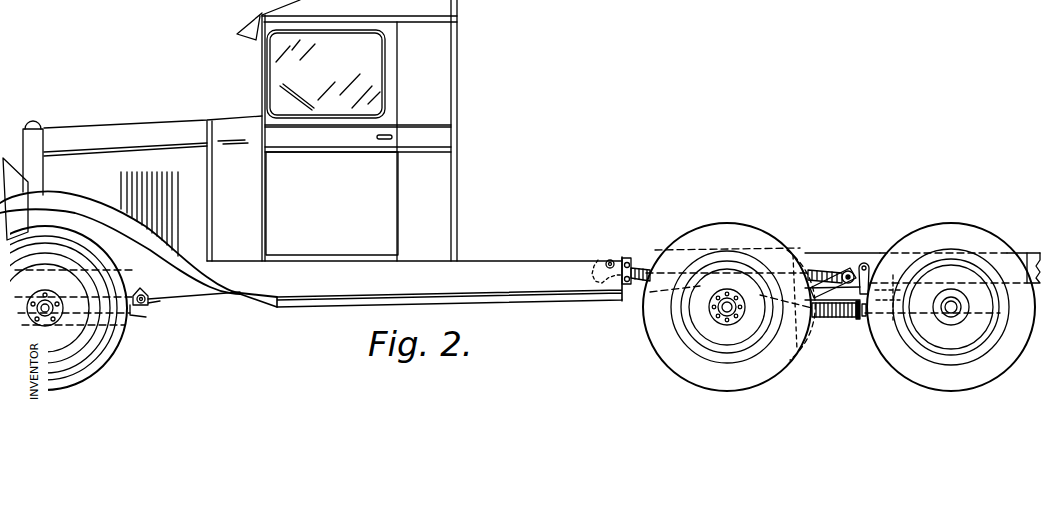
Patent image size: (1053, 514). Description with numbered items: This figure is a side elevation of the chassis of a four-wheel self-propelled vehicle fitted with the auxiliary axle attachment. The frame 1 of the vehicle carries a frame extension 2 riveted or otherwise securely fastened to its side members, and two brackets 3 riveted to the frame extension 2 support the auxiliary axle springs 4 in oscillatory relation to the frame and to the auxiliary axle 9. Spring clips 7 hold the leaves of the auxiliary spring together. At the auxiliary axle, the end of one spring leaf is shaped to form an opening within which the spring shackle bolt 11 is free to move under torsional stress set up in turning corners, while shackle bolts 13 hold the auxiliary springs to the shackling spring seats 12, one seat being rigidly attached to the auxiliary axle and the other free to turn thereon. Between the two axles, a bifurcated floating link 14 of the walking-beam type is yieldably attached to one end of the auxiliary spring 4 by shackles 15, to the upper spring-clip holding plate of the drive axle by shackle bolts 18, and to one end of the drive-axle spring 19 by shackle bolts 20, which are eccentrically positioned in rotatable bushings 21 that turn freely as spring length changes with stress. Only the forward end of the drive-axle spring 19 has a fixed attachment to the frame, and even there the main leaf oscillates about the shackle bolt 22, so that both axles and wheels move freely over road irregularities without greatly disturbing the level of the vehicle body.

The frame 1 is at (645, 256).
The frame extension 2 is at (849, 270).
The bracket 3 is at (870, 268).
The auxiliary axle spring 4 is at (840, 316).
The spring clip 7 is at (857, 320).
The auxiliary axle 9 is at (964, 302).
The spring shackle bolt 11 is at (951, 307).
The shackling spring seat 12 is at (955, 320).
The shackle bolt 13 is at (962, 312).
The bifurcated floating link 14 is at (797, 238).
The shackle 15 is at (806, 348).
The shackle bolt 18 is at (740, 290).
The drive-axle spring 19 is at (642, 283).
The shackle bolt 20 is at (864, 262).
The rotatable bushing 21 is at (838, 268).
The shackle bolt 22 is at (611, 260).